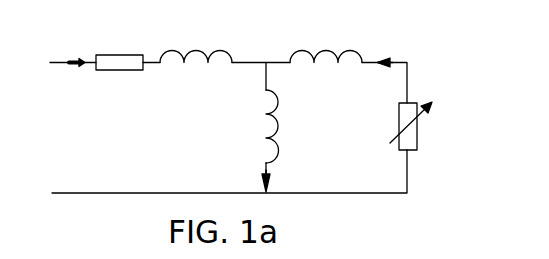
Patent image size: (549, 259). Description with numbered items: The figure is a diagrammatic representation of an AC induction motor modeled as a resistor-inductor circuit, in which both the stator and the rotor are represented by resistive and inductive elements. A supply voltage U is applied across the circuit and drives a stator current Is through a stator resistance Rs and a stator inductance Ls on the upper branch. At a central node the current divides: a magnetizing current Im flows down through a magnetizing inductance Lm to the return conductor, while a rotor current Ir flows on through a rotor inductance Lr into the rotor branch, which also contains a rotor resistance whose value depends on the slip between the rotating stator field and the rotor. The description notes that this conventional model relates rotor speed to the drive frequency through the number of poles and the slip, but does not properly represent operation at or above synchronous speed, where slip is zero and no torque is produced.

The stator voltage U is at (56, 129).
The stator current Is is at (76, 47).
The stator resistance Rs is at (119, 47).
The stator leakage inductance Ls is at (196, 42).
The rotor leakage inductance Lr is at (326, 41).
The rotor current Ir is at (388, 45).
The magnetizing inductance Lm is at (290, 126).
The magnetizing current Im is at (251, 174).